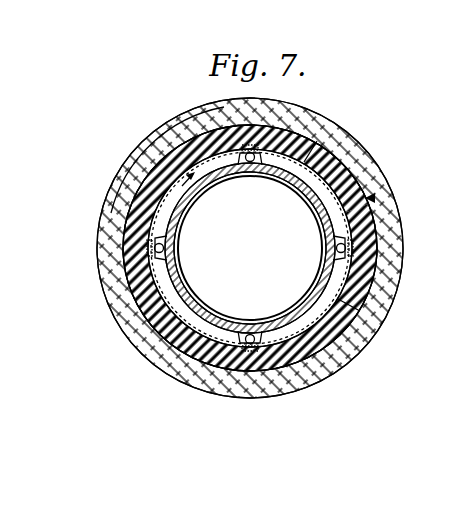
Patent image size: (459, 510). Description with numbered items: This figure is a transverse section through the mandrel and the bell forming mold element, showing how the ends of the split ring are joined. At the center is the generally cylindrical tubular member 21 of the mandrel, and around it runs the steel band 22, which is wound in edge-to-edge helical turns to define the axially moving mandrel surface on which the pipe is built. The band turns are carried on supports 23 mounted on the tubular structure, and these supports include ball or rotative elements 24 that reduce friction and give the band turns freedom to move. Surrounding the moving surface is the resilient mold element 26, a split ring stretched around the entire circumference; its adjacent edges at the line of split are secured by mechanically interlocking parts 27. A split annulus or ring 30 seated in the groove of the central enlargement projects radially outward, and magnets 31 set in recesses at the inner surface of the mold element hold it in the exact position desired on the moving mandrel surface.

The split annulus or ring 30 is at (170, 130).
The steel band 22 is at (283, 142).
The tubular member 21 is at (305, 185).
The supports 23 is at (128, 220).
The ball or rotative elements 24 is at (152, 250).
The mold element 26 is at (372, 198).
The mechanically interlocking parts 27 is at (352, 250).
The magnets 31 is at (342, 302).